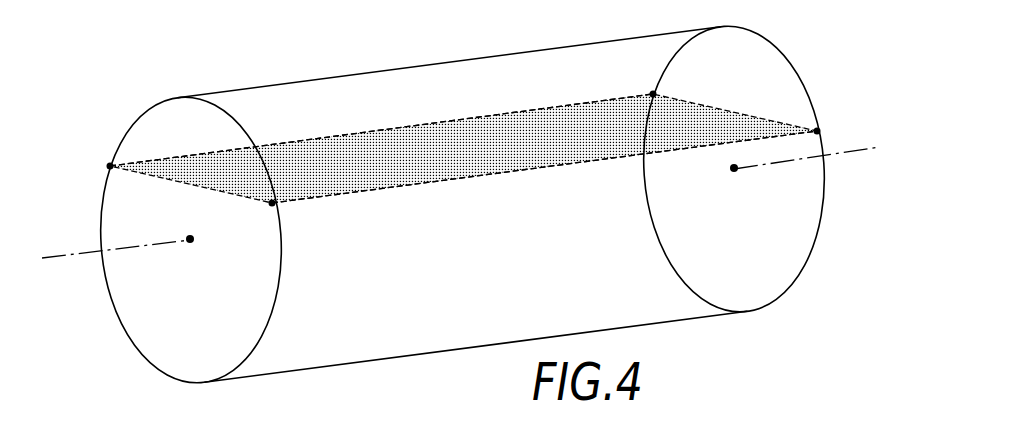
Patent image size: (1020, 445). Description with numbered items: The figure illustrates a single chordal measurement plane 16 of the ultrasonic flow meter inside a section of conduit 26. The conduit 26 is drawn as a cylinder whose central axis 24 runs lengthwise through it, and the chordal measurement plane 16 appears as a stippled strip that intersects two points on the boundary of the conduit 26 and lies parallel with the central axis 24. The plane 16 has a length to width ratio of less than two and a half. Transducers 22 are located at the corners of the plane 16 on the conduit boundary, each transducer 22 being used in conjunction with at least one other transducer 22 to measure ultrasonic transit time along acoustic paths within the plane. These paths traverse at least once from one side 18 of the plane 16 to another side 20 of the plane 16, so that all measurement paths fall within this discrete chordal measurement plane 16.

The chordal measurement plane 16 is at (540, 157).
The one side of the plane 18 is at (358, 147).
The another side of the plane 20 is at (415, 177).
The transducer 22 is at (110, 166).
The central axis 24 is at (90, 252).
The conduit 26 is at (675, 320).